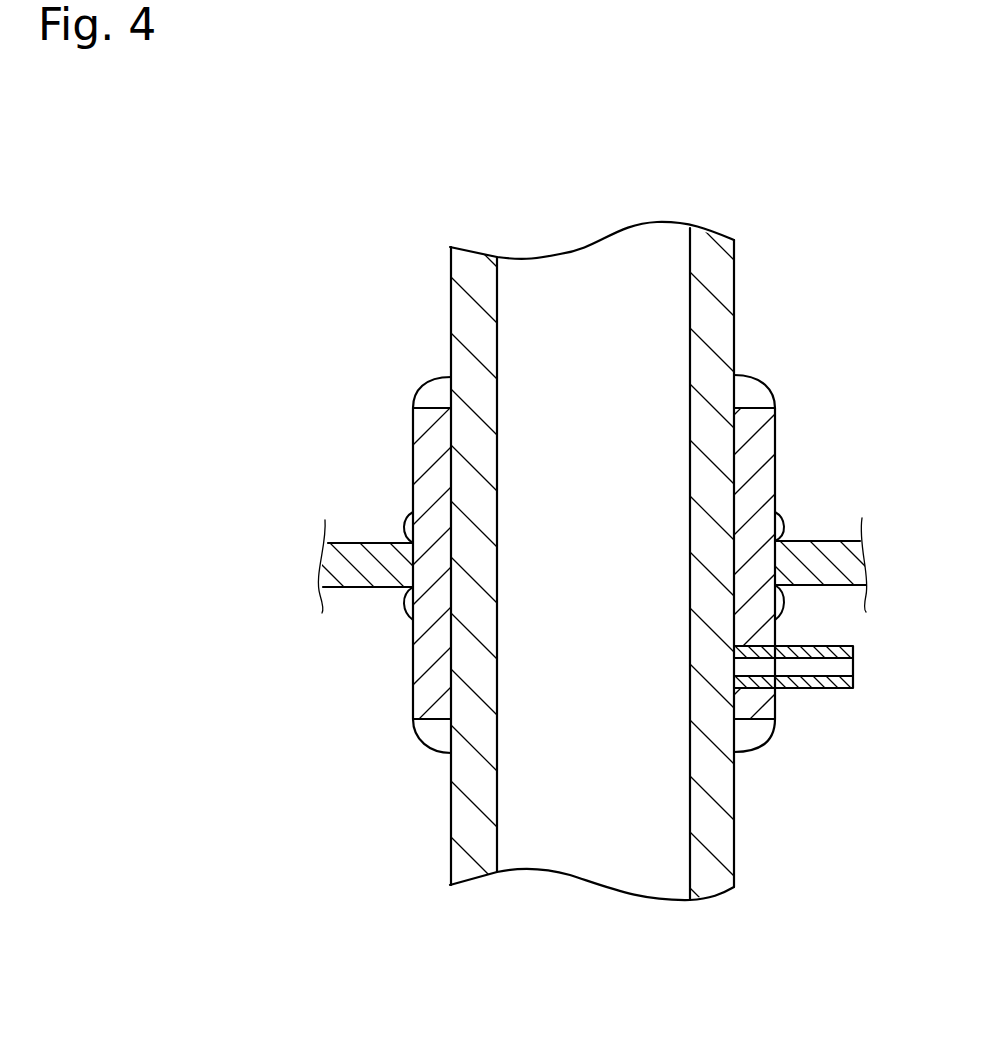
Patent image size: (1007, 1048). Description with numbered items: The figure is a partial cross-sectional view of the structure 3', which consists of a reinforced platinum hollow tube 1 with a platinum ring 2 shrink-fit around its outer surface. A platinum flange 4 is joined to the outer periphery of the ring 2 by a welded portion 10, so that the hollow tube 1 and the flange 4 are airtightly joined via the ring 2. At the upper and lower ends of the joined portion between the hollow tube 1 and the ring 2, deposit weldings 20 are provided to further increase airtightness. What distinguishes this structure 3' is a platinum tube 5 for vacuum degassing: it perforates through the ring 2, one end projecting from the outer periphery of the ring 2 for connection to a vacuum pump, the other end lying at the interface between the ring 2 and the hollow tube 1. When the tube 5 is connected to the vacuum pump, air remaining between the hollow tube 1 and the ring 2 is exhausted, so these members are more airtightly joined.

The hollow tube 1 is at (468, 303).
The ring 2 is at (428, 445).
The deposit welding 20 is at (428, 400).
The flange 4 is at (369, 558).
The welded portion 10 is at (407, 527).
The tube for vacuum degassing 5 is at (843, 690).
The structure 3' is at (831, 146).